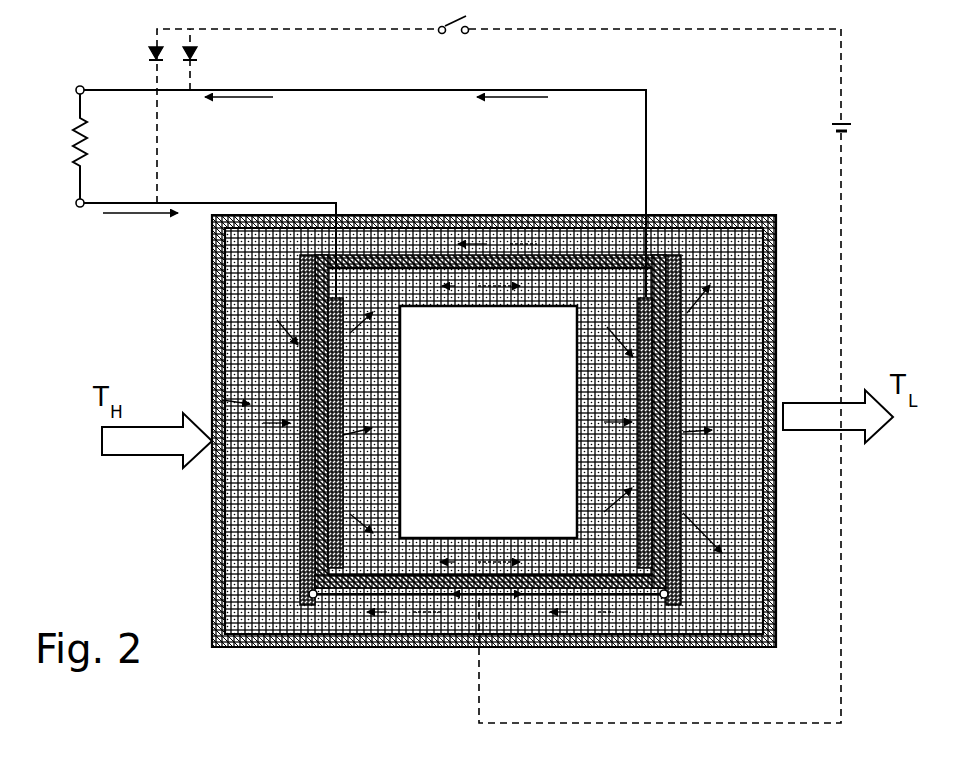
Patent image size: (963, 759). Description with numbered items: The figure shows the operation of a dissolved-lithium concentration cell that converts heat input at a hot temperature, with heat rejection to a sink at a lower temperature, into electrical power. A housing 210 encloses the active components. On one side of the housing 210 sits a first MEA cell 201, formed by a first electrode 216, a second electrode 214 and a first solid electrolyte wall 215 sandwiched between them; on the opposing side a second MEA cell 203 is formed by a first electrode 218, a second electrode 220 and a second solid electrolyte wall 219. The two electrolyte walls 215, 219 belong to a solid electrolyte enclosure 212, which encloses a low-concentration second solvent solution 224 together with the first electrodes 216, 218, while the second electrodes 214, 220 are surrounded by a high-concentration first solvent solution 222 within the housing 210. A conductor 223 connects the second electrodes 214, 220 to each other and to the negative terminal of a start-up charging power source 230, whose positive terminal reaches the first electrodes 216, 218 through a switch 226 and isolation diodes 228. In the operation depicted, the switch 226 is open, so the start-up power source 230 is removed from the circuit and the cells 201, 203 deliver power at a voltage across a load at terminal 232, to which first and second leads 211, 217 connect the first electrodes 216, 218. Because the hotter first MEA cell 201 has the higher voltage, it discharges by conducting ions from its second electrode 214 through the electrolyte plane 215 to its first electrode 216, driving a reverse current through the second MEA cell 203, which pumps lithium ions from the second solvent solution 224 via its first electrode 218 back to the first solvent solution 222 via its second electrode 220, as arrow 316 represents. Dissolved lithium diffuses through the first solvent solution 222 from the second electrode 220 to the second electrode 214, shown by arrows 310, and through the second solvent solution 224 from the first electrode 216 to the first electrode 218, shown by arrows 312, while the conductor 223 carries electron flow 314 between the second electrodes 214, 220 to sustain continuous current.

The first MEA cell 201 is at (405, 419).
The second MEA cell 203 is at (572, 418).
The housing 210 is at (212, 285).
The first lead 211 is at (285, 203).
The solid electrolyte enclosure 212 is at (345, 597).
The second electrode of the first MEA cell 214 is at (305, 600).
The first solid electrolyte wall 215 is at (318, 540).
The first electrode of the first MEA cell 216 is at (330, 598).
The second lead 217 is at (647, 145).
The first electrode of the second MEA cell 218 is at (660, 600).
The second solid electrolyte wall 219 is at (660, 483).
The second electrode of the second MEA cell 220 is at (670, 600).
The first solvent solution 222 is at (222, 400).
The conductor 223 is at (547, 605).
The second solvent solution 224 is at (373, 452).
The switch 226 is at (468, 33).
The isolation diodes 228 is at (148, 46).
The start-up charging power source 230 is at (841, 132).
The terminal 232 is at (80, 207).
The arrows indicating lithium diffusion through the first solvent solution 310 is at (513, 243).
The arrows indicating lithium diffusion through the second solvent solution 312 is at (362, 322).
The electron flow 314 is at (492, 598).
The arrow representing lithium ion pumping through the second MEA cell 316 is at (640, 432).